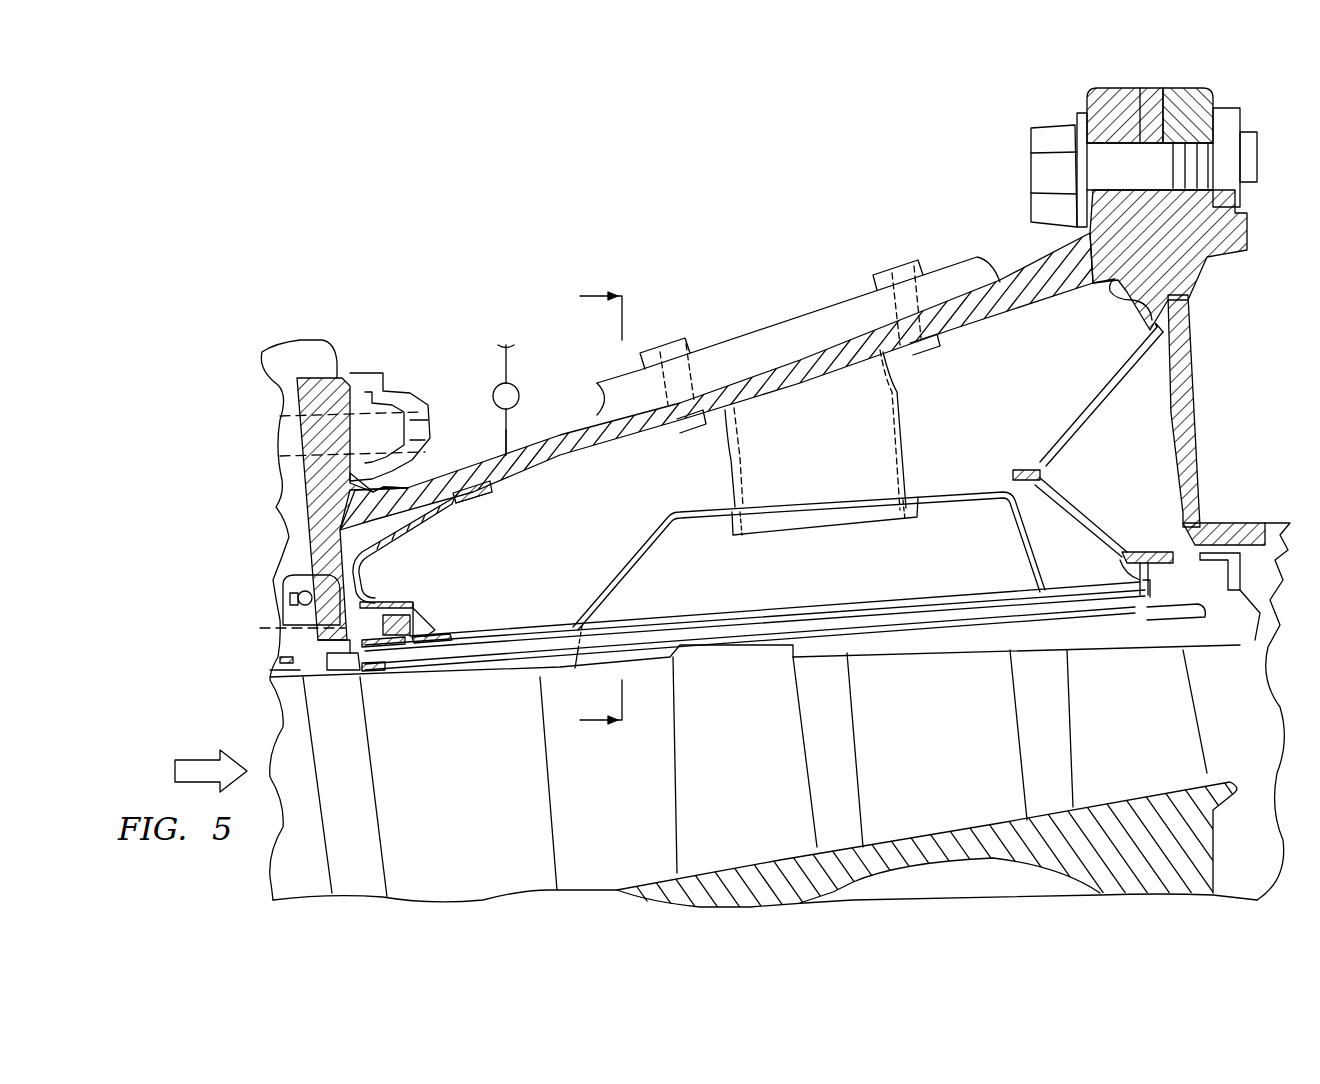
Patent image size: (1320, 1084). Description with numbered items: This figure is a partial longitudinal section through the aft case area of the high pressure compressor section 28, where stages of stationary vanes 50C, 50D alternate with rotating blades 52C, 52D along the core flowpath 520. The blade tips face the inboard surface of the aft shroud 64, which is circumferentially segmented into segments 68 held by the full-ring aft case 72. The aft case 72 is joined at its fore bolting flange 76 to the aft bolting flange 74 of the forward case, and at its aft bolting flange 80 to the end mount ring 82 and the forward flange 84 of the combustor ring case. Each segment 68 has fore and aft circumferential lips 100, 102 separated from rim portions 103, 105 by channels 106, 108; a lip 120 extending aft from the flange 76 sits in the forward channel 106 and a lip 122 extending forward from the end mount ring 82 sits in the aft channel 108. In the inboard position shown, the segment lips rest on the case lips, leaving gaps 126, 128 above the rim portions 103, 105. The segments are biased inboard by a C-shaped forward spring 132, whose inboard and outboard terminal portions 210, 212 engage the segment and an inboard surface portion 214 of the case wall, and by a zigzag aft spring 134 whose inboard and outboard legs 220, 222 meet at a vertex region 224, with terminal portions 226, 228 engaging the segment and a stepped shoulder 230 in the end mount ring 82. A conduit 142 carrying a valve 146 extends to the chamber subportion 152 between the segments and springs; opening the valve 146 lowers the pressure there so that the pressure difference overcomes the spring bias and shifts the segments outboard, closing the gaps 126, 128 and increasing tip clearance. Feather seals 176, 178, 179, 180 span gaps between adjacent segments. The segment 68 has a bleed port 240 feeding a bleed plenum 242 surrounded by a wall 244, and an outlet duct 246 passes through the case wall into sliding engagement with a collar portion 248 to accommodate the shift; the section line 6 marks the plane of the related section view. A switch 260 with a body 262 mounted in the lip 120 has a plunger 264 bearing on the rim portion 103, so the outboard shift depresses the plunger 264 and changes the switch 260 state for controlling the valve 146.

The section line 6- 6 is at (589, 508).
The high pressure compressor section 28 is at (370, 265).
The stationary vane 50C is at (487, 847).
The stationary vane 50D is at (965, 741).
The rotating blade 52C is at (755, 817).
The rotating blade 52D is at (1152, 756).
The shroud 64 is at (1197, 515).
The shroud segment 68 is at (527, 612).
The aft case 72 is at (560, 437).
The aft bolting flange 74 is at (275, 505).
The fore bolting flange 76 is at (352, 385).
The aft bolting flange 80 is at (1085, 108).
The end mount ring 82 is at (1128, 300).
The forward flange 84 is at (1197, 100).
The fore circumferential lip 100 is at (340, 625).
The aft circumferential lip 102 is at (1212, 530).
The rim portion 103 is at (342, 672).
The rim portion 105 is at (1203, 612).
The forward channel 106 is at (445, 665).
The aft channel 108 is at (1150, 605).
The lip 120 is at (402, 620).
The lip 122 is at (1215, 585).
The gap 126 is at (300, 660).
The gap 128 is at (1236, 600).
The forward spring 132 is at (428, 530).
The aft spring 134 is at (1085, 402).
The conduit 142 is at (500, 428).
The valve 146 is at (494, 385).
The chamber subportion 152 is at (652, 505).
The feather seal 176 is at (890, 628).
The feather seal 178 is at (862, 610).
The feather seal 179 is at (422, 638).
The feather seal 180 is at (1135, 580).
The inboard terminal portion 210 is at (390, 610).
The outboard terminal portion 212 is at (496, 490).
The inboard surface portion 214 is at (478, 503).
The inboard leg 220 is at (1088, 503).
The outboard leg 222 is at (1115, 408).
The vertex region 224 is at (1048, 477).
The inboard terminal portion 226 is at (1147, 550).
The outboard terminal portion 228 is at (1150, 343).
The stepped shoulder 230 is at (1185, 322).
The bleed port 240 is at (578, 672).
The bleed plenum 242 is at (755, 594).
The wall 244 is at (945, 500).
The outlet duct 246 is at (905, 415).
The collar portion 248 is at (917, 520).
The switch 260 is at (262, 628).
The switch body 262 is at (300, 612).
The plunger 264 is at (400, 650).
The core flowpath 520 is at (210, 752).